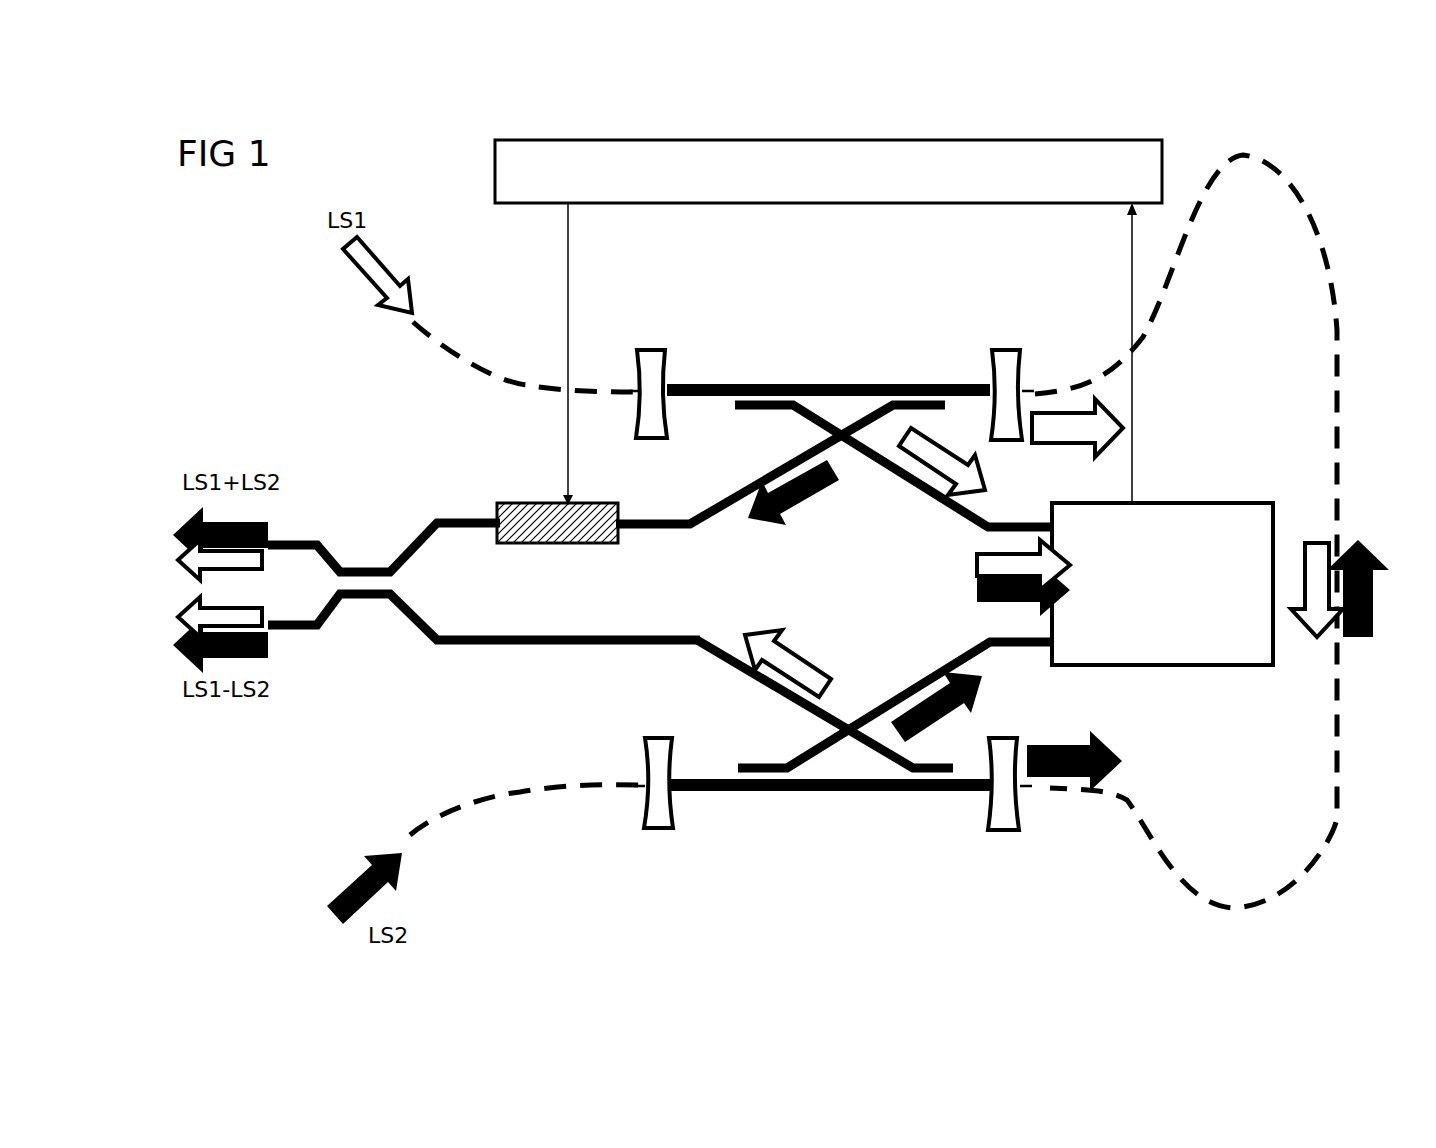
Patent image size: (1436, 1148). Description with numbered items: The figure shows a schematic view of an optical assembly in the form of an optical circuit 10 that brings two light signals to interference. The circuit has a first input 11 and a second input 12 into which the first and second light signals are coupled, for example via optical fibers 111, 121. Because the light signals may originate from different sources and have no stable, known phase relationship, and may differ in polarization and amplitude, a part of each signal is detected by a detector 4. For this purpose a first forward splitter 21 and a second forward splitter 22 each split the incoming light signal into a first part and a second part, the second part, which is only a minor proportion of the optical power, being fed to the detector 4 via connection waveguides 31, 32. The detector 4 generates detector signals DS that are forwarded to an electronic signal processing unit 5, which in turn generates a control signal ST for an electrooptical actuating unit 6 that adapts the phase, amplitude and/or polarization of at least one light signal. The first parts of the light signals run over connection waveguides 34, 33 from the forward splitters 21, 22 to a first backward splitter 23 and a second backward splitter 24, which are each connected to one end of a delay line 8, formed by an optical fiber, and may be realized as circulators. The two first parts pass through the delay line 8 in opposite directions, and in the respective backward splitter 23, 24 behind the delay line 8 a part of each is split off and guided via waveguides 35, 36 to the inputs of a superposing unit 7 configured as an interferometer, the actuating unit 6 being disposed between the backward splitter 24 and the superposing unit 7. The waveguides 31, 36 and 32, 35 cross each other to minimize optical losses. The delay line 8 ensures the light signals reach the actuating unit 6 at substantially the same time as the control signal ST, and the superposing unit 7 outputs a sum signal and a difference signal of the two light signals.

The optical circuit 10 is at (1114, 122).
The electronic signal processing unit 5 is at (958, 165).
The detector 4 is at (1205, 525).
The electrooptical actuating unit 6 is at (590, 545).
The superposing unit 7 is at (371, 540).
The delay line 8 is at (1340, 445).
The first input 11 is at (658, 340).
The second input 12 is at (663, 815).
The first forward splitter 21 is at (778, 380).
The second forward splitter 22 is at (762, 825).
The first backward splitter 23 is at (929, 812).
The second backward splitter 24 is at (929, 380).
The connection waveguide 31 is at (888, 472).
The connection waveguide 32 is at (905, 688).
The connection waveguide 33 is at (832, 350).
The connection waveguide 34 is at (848, 792).
The waveguide 35 is at (717, 640).
The waveguide 36 is at (713, 521).
The optical fiber 111 is at (478, 368).
The optical fiber 121 is at (512, 797).
The control signal ST is at (572, 318).
The detector signals DS is at (1134, 407).